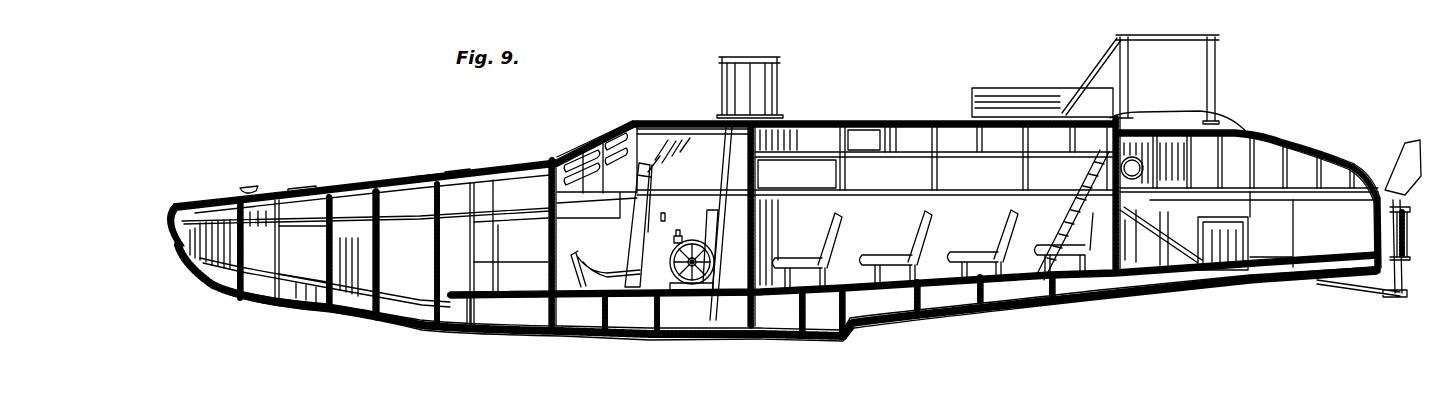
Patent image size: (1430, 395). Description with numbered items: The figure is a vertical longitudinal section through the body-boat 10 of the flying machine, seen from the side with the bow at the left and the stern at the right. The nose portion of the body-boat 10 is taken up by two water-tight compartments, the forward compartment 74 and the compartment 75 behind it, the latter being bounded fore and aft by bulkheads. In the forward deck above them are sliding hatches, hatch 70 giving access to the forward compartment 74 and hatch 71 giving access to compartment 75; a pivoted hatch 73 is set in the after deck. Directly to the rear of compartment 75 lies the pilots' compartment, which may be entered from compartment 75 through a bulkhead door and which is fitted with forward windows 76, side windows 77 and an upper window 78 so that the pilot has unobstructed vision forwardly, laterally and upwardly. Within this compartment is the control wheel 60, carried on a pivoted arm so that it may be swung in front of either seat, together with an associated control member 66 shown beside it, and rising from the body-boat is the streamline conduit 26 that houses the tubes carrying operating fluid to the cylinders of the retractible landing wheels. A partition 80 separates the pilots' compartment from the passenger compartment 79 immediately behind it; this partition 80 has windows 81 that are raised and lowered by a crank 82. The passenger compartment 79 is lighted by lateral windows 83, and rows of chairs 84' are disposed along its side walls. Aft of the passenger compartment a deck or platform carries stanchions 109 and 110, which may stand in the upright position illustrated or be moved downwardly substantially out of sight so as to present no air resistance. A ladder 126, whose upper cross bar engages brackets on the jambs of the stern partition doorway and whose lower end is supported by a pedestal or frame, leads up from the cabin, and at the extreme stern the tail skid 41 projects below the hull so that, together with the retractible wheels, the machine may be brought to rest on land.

The body-boat 10 is at (264, 300).
The streamline conduit 26 is at (780, 82).
The tail skid 41 is at (1387, 297).
The control wheel 60 is at (709, 275).
The steering column 66 is at (652, 192).
The sliding hatch 70 is at (310, 186).
The sliding hatch 71 is at (440, 173).
The pivoted hatch 73 is at (1040, 93).
The water-tight compartment 74 is at (303, 254).
The water-tight compartment 75 is at (511, 255).
The forward window 76 is at (607, 142).
The side window 77 is at (679, 153).
The upper window 78 is at (667, 118).
The passenger compartment 79 is at (875, 226).
The partition 80 is at (617, 247).
The window 81 is at (760, 178).
The crank 82 is at (773, 224).
The lateral window 83 is at (893, 172).
The chair 84' is at (929, 248).
The stanchion 109 is at (1130, 80).
The stanchion 110 is at (1217, 83).
The ladder 126 is at (1007, 207).